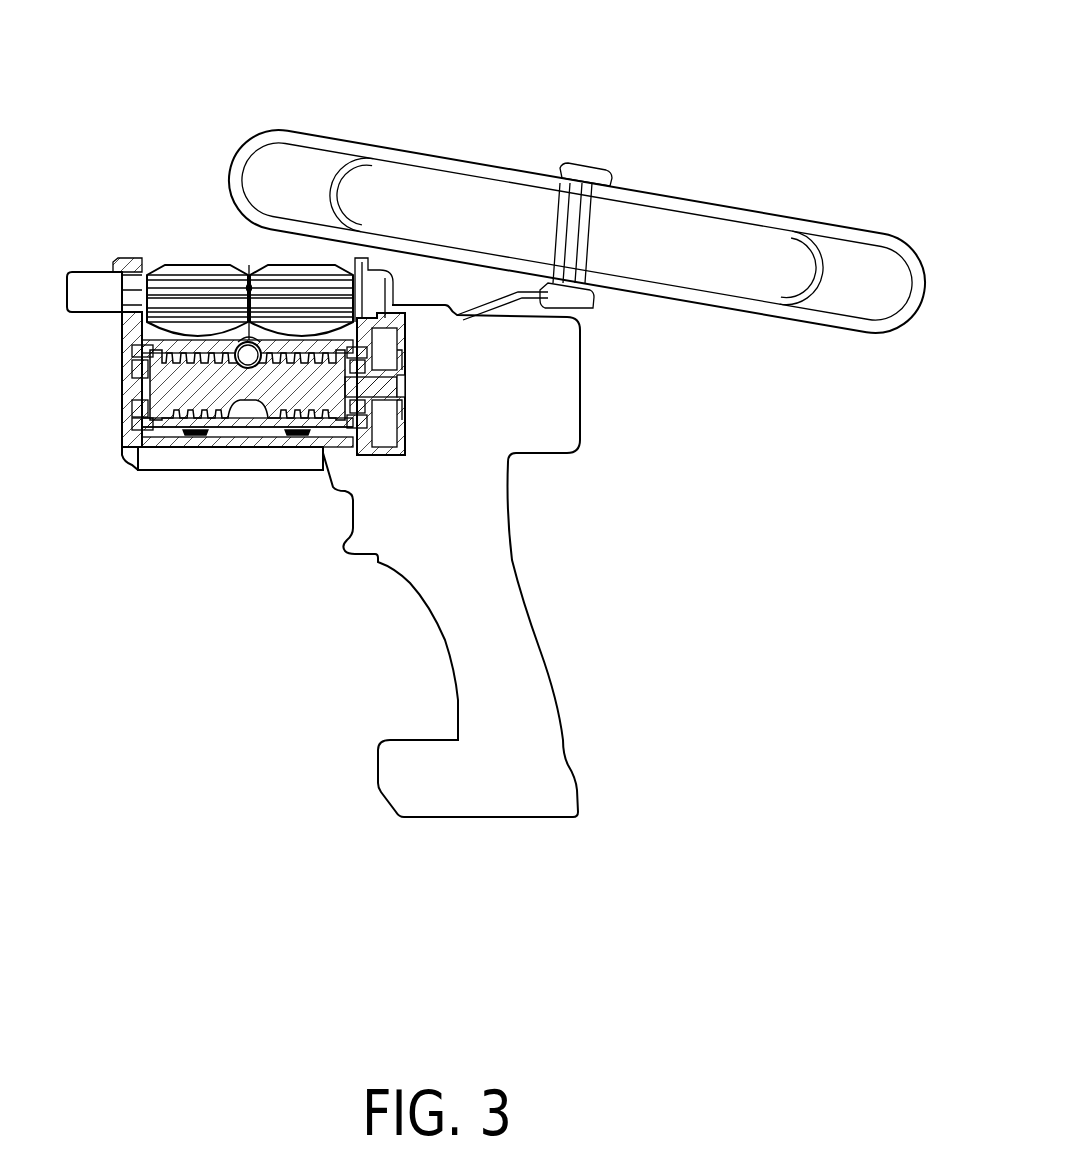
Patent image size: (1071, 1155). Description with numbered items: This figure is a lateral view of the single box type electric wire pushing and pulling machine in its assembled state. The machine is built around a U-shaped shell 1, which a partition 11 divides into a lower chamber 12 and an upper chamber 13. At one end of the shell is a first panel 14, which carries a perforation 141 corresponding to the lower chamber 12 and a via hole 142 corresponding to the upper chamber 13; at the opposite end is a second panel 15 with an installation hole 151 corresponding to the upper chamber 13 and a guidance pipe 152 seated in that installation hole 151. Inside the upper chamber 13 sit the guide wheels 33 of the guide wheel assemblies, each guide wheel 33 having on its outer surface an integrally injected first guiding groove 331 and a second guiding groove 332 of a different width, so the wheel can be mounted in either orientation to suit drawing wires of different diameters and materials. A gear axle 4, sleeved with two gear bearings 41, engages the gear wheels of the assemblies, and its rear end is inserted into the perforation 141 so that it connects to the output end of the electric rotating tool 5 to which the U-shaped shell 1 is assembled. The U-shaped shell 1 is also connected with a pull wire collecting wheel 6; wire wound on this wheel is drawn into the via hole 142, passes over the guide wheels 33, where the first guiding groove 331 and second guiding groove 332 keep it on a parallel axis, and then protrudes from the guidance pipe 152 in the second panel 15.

The U-shaped shell 1 is at (193, 352).
The partition 11 is at (133, 333).
The lower chamber 12 is at (133, 378).
The upper chamber 13 is at (163, 302).
The first panel 14 is at (361, 527).
The perforation 141 is at (432, 383).
The via hole 142 is at (393, 290).
The second panel 15 is at (133, 448).
The installation hole 151 is at (126, 290).
The guidance pipe 152 is at (78, 270).
The guide wheel 33 is at (250, 171).
The first guiding groove 331 is at (224, 302).
The second guiding groove 332 is at (253, 302).
The gear axle 4 is at (215, 385).
The gear bearing 41 is at (152, 420).
The electric rotating tool 5 is at (528, 663).
The pull wire collecting wheel 6 is at (658, 195).